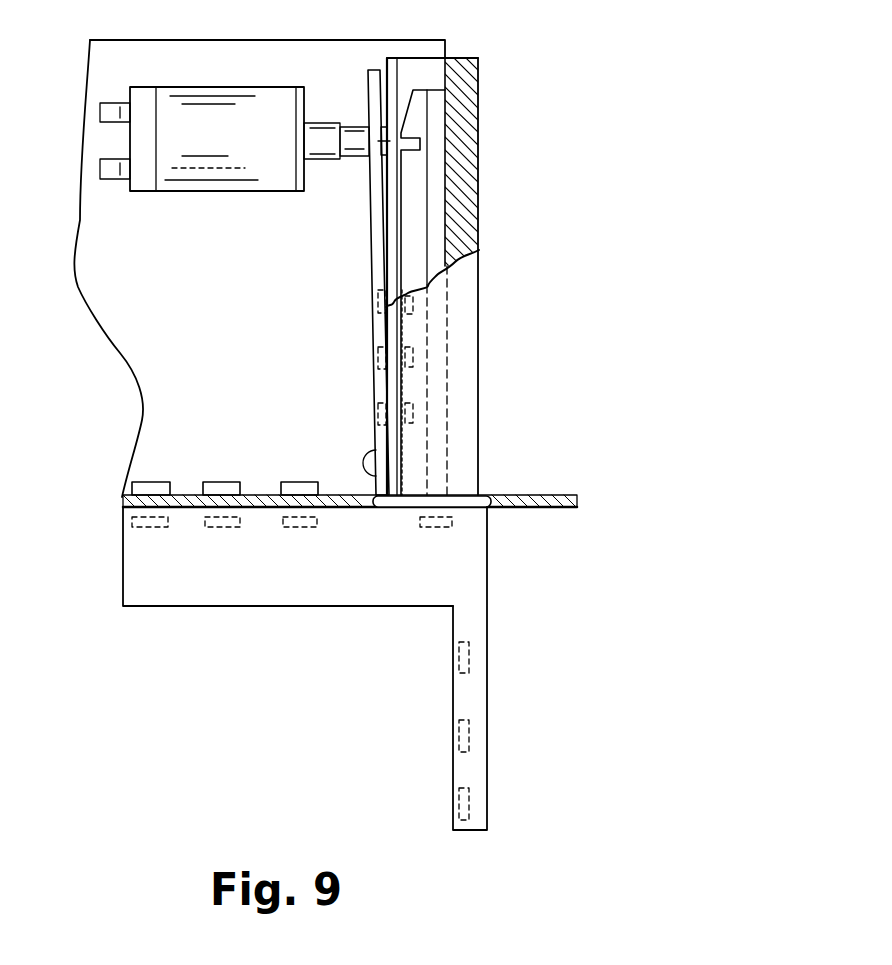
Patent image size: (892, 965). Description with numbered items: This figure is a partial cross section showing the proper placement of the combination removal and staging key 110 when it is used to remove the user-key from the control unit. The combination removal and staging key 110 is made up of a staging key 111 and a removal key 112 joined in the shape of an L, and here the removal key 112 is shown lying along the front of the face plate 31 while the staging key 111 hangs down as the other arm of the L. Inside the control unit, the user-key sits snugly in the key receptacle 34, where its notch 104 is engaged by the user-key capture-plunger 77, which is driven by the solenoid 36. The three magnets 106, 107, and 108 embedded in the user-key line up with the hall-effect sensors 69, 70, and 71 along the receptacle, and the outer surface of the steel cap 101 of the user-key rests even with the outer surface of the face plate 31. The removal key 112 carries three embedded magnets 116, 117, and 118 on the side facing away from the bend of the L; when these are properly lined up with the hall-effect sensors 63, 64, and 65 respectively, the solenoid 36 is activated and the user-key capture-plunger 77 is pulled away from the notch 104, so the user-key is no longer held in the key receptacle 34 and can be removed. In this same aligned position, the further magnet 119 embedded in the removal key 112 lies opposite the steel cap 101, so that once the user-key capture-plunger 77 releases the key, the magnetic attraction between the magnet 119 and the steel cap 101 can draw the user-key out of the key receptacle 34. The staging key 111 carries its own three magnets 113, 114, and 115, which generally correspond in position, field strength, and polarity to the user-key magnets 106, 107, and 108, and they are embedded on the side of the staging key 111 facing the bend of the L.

The face plate 31 is at (550, 495).
The key receptacle 34 is at (480, 243).
The solenoid 36 is at (233, 190).
The hall-effect sensor 63 is at (147, 483).
The hall-effect sensor 64 is at (222, 485).
The hall-effect sensor 65 is at (305, 485).
The hall-effect sensor 69 is at (378, 420).
The hall-effect sensor 70 is at (378, 365).
The hall-effect sensor 71 is at (378, 308).
The user-key capture-plunger 77 is at (401, 138).
The steel cap 101 is at (473, 505).
The notch 104 is at (372, 103).
The magnet 106 is at (413, 408).
The magnet 107 is at (413, 353).
The magnet 108 is at (413, 299).
The combination removal and staging key 110 is at (257, 753).
The staging key 111 is at (518, 708).
The removal key 112 is at (140, 627).
The magnet 113 is at (455, 653).
The magnet 114 is at (455, 740).
The magnet 115 is at (455, 813).
The magnet 116 is at (147, 532).
The magnet 117 is at (227, 530).
The magnet 118 is at (305, 532).
The magnet 119 is at (437, 527).